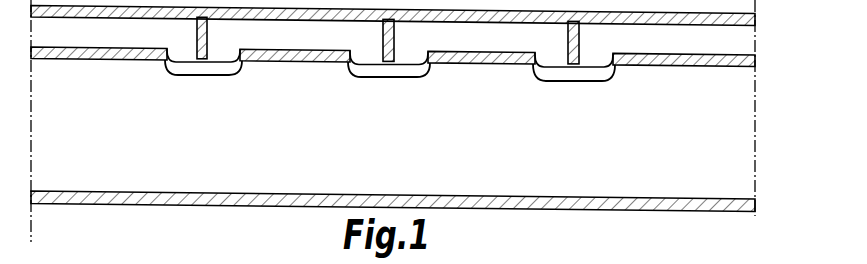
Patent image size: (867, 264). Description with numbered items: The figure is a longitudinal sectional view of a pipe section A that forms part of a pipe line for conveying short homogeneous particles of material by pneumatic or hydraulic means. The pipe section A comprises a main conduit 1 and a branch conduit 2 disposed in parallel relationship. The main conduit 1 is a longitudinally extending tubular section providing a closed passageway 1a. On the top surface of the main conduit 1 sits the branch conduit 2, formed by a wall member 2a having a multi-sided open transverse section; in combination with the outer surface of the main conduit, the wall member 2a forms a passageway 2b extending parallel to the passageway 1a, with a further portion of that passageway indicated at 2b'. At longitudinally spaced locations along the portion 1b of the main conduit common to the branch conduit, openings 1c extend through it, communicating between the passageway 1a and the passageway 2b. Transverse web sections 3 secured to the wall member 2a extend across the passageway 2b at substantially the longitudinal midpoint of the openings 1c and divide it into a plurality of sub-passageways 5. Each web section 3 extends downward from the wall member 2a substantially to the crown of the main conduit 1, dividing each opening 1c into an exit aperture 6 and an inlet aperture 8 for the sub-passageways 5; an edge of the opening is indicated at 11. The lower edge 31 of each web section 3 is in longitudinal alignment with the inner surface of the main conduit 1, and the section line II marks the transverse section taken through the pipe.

The main conduit 1 is at (723, 192).
The closed passageway 1a is at (516, 161).
The portion of the main conduit 1b is at (497, 61).
The openings 1c is at (414, 74).
The branch conduit 2 is at (688, 28).
The wall member 2a is at (313, 19).
The passageway 2b is at (497, 37).
The top plate portion 2b' is at (558, 256).
The transverse web sections 3 is at (580, 41).
The sub-passageways 5 is at (440, 36).
The exit aperture 6 is at (171, 65).
The inlet aperture 8 is at (237, 65).
The trough edge 11 is at (338, 68).
The lower edge 31 is at (390, 65).
The pipe section A is at (510, 209).
The section line II- II is at (84, 24).